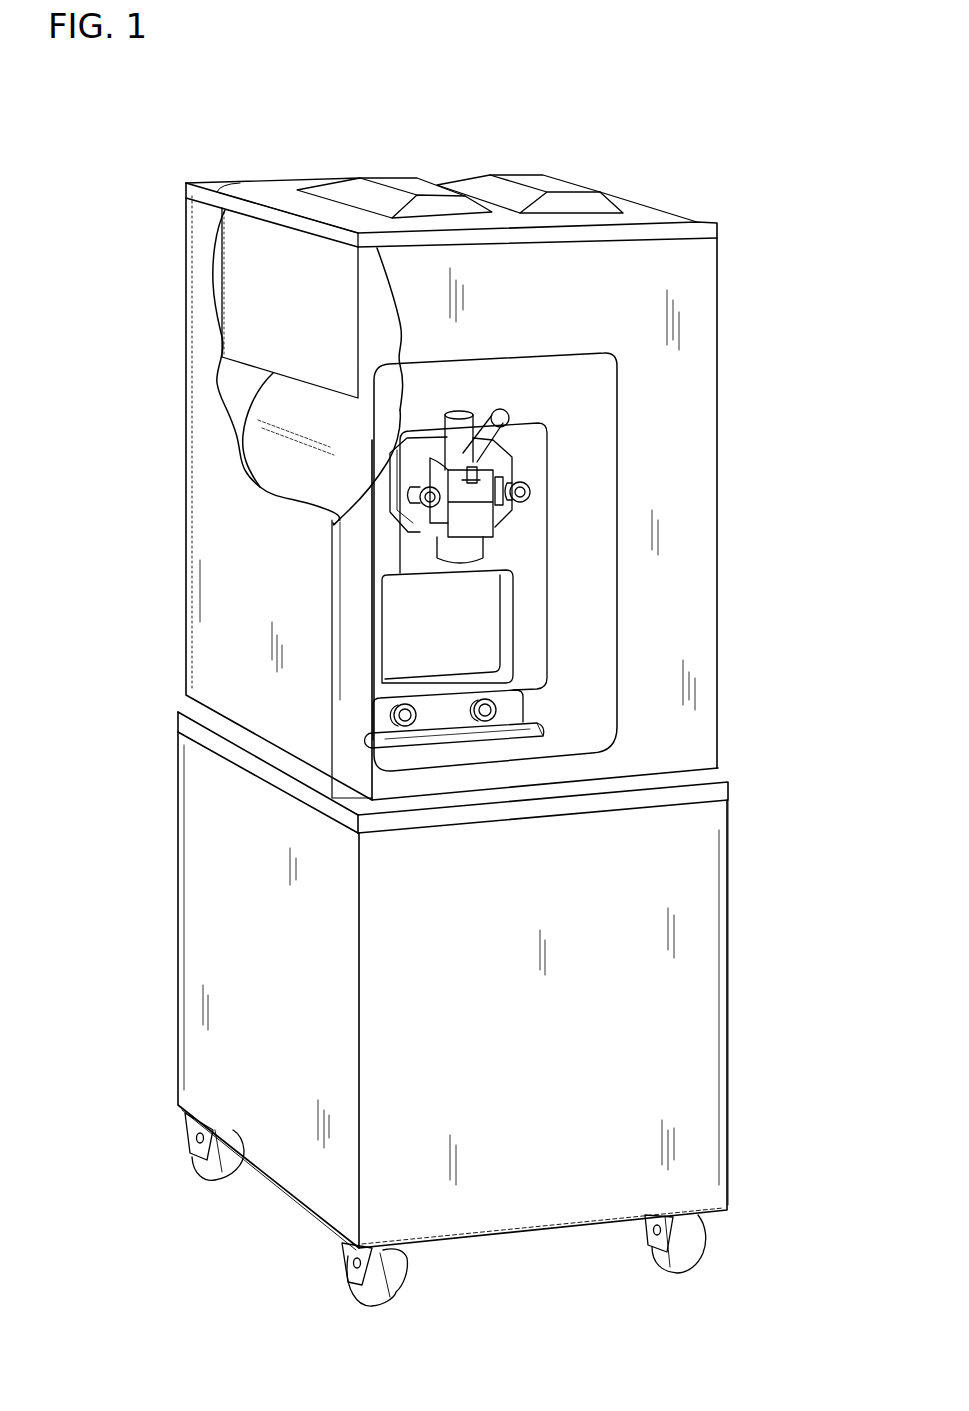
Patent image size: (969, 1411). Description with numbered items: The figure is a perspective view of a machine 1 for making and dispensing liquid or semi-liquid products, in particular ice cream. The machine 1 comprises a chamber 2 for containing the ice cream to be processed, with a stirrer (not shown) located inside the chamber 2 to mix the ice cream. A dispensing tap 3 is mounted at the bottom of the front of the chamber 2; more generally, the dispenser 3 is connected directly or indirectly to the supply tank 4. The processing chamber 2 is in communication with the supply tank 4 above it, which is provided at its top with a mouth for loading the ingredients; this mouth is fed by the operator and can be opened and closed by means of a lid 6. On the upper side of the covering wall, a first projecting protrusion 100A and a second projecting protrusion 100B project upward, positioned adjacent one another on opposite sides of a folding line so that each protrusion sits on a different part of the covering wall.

The machine 1 is at (720, 147).
The chamber 2 is at (277, 448).
The dispensing tap 3 is at (473, 493).
The supply tank 4 is at (260, 300).
The lid 6 is at (537, 183).
The first projecting protrusion 100A is at (377, 166).
The second projecting protrusion 100B is at (571, 166).